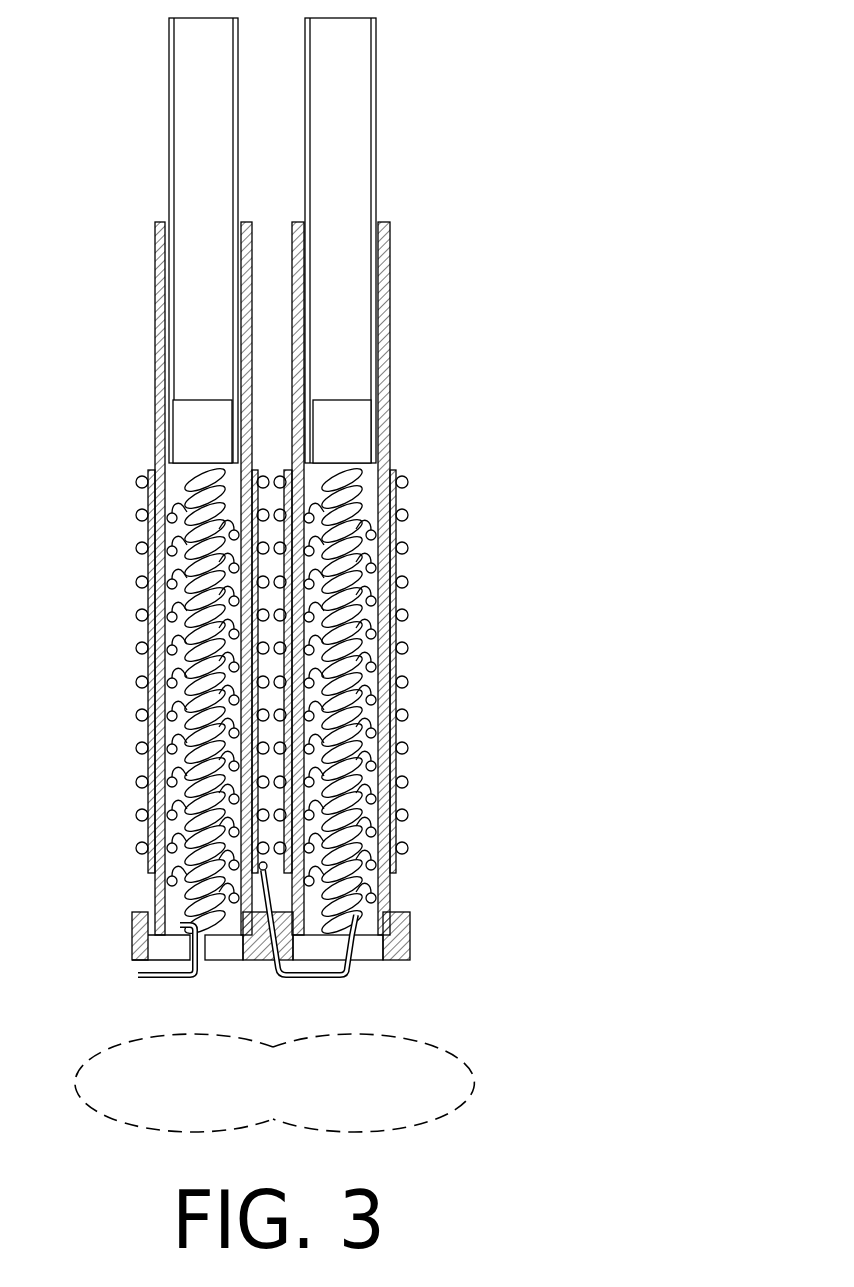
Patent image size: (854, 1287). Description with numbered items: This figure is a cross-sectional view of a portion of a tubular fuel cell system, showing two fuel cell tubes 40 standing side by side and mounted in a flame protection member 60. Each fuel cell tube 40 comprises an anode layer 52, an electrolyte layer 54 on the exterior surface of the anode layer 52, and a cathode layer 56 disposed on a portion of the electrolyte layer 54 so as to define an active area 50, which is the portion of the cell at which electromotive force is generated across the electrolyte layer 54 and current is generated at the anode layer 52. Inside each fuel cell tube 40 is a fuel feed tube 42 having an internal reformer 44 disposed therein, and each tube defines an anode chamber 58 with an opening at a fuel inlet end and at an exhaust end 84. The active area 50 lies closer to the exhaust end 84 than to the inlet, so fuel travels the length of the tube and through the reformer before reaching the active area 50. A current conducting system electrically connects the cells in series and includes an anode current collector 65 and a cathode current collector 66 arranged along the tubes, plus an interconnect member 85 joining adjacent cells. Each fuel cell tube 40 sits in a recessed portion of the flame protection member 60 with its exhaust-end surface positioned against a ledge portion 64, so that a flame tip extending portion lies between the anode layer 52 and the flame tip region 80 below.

The fuel feed tube 42 is at (372, 153).
The fuel cell tube 40 is at (380, 357).
The internal reformer 44 is at (348, 441).
The active area 50 is at (405, 482).
The anode layer 52 is at (400, 517).
The electrolyte layer 54 is at (395, 568).
The cathode layer 56 is at (395, 603).
The anode chamber 58 is at (178, 485).
The flame protection member 60 is at (132, 930).
The ledge portion 64 is at (370, 962).
The anode current collector 65 is at (163, 667).
The cathode current collector 66 is at (140, 582).
The flame tip region 80 is at (302, 1104).
The exhaust end 84 is at (398, 937).
The interconnect member 85 is at (165, 965).